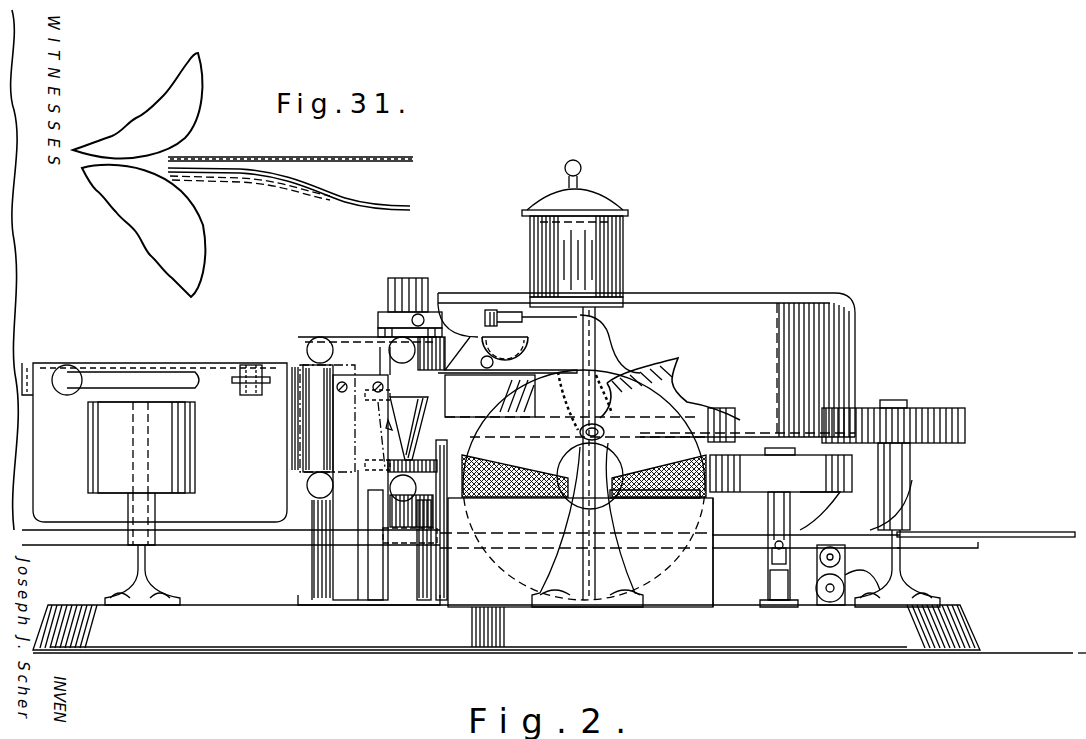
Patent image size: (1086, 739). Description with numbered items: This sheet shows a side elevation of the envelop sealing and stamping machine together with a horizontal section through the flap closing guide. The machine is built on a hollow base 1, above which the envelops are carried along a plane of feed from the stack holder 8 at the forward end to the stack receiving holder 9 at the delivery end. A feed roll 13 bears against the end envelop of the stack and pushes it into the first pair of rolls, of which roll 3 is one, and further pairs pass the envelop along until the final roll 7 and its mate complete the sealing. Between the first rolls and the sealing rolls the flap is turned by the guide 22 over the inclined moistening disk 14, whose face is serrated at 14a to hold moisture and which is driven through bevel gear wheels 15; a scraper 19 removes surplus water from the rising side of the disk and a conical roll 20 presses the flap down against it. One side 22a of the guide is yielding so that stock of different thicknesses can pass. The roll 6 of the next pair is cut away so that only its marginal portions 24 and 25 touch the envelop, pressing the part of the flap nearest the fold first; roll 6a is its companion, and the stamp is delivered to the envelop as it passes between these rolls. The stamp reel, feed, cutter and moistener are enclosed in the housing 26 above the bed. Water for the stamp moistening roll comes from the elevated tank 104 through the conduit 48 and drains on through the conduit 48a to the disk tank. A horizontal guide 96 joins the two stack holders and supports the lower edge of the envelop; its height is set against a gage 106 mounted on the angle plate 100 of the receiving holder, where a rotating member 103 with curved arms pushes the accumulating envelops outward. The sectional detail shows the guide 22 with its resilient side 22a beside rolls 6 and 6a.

In FIG. 2, the base 1 is at (972, 632).
In FIG. 2, the feed roll 3 is at (750, 492).
In FIG. 31, the sealing roll 6 is at (143, 231).
In FIG. 2, the sealing roll 6 is at (385, 462).
In FIG. 31, the sealing roll 6a is at (137, 105).
In FIG. 2, the final sealing roll 7 is at (296, 362).
In FIG. 2, the stack holder 8 is at (1028, 533).
In FIG. 2, the stack receiving holder 9 is at (33, 484).
In FIG. 2, the feed roll 13 is at (965, 427).
In FIG. 2, the moistening disk 14 is at (581, 485).
In FIG. 2, the serrations 14a is at (580, 552).
In FIG. 2, the bevel gear wheels 15 is at (696, 552).
In FIG. 2, the scraper 19 is at (676, 499).
In FIG. 2, the conical roll 20 is at (573, 406).
In FIG. 31, the guide 22 is at (218, 157).
In FIG. 2, the guide 22 is at (655, 365).
In FIG. 31, the yielding side of guide 22a is at (296, 192).
In FIG. 2, the yielding side of guide 22a is at (572, 396).
In FIG. 2, the contact portion of roll 24 is at (411, 428).
In FIG. 2, the contact portion of roll 25 is at (409, 428).
In FIG. 2, the housing 26 is at (790, 290).
In FIG. 2, the conduit 48 is at (526, 332).
In FIG. 2, the conduit 48a is at (470, 455).
In FIG. 2, the guide 96 is at (744, 545).
In FIG. 2, the angle plate 100 is at (154, 442).
In FIG. 2, the rotating member 103 is at (141, 473).
In FIG. 2, the elevated tank 104 is at (624, 232).
In FIG. 2, the gage 106 is at (232, 385).